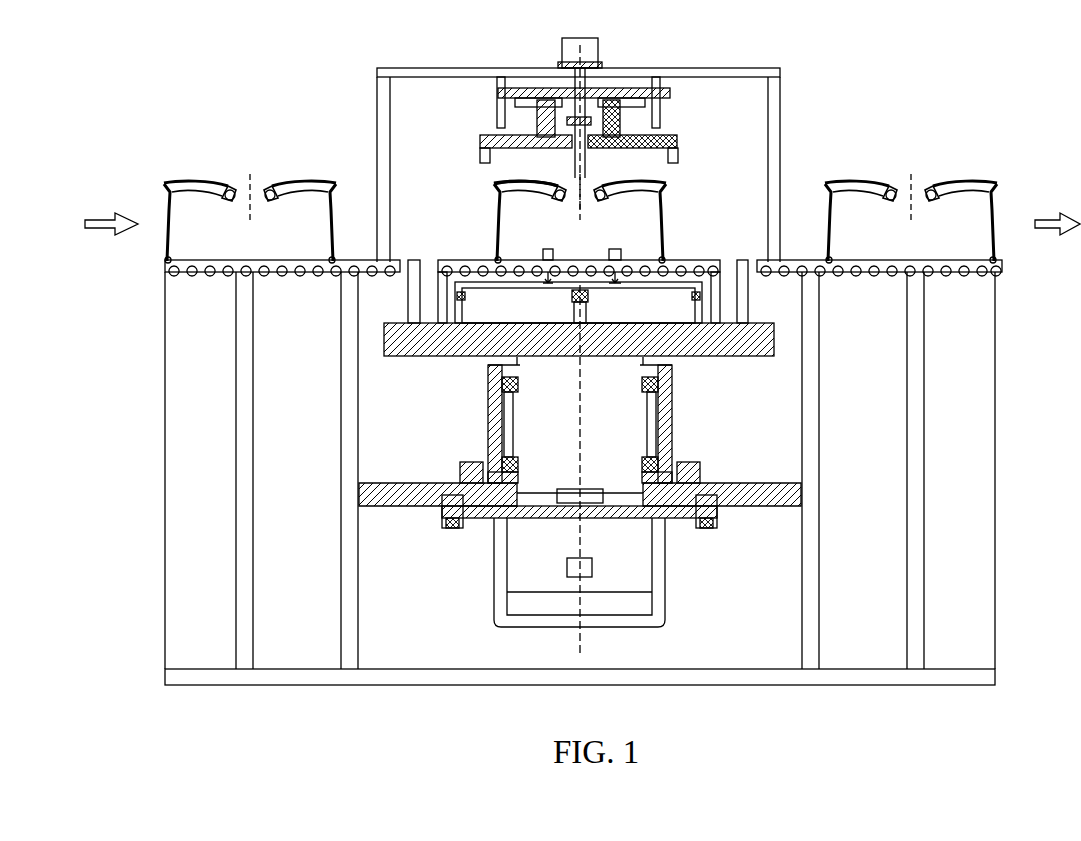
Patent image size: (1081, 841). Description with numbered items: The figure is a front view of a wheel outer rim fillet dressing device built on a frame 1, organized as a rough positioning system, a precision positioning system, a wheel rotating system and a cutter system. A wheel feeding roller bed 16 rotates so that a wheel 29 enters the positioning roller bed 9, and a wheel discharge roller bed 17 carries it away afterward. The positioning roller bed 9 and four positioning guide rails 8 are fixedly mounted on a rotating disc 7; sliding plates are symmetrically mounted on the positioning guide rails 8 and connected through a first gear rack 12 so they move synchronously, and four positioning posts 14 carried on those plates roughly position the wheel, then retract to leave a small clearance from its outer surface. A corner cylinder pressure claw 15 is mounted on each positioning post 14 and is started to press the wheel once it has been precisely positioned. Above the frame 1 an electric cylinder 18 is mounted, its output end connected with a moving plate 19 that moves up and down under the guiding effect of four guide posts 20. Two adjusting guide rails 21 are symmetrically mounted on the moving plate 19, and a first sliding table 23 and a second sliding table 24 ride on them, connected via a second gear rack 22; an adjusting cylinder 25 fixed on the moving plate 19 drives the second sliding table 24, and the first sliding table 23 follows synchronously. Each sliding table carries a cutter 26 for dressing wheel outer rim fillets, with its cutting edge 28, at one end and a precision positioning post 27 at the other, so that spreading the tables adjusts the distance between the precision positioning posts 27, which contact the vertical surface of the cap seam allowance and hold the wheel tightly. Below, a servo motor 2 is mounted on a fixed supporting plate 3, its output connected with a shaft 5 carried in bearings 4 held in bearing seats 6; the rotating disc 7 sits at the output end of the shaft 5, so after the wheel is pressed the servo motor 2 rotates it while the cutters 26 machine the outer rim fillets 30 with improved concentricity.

The frame 1 is at (505, 670).
The servo motor 2 is at (500, 605).
The fixed supporting plate 3 is at (363, 497).
The bearing 4 is at (490, 452).
The shaft 5 is at (490, 427).
The bearing seat 6 is at (490, 403).
The rotating disc 7 is at (405, 350).
The positioning guide rail 8 is at (460, 315).
The positioning roller bed 9 is at (460, 262).
The first gear rack 12 is at (575, 297).
The positioning post 14 is at (553, 260).
The corner cylinder pressure claw 15 is at (546, 250).
The wheel feeding roller bed 16 is at (260, 262).
The wheel discharge roller bed 17 is at (922, 262).
The electric cylinder 18 is at (562, 44).
The moving plate 19 is at (497, 90).
The guide post 20 is at (498, 115).
The adjusting guide rail 21 is at (643, 110).
The second gear rack 22 is at (588, 103).
The first sliding table 23 is at (499, 133).
The second sliding table 24 is at (663, 140).
The adjusting cylinder 25 is at (657, 112).
The first/second cutter for dressing wheel outer rim fillets 26 is at (482, 157).
The precision positioning post 27 is at (570, 163).
The cutting edge 28 is at (672, 160).
The wheel 29 is at (503, 236).
The outer rim fillets 30 is at (495, 183).